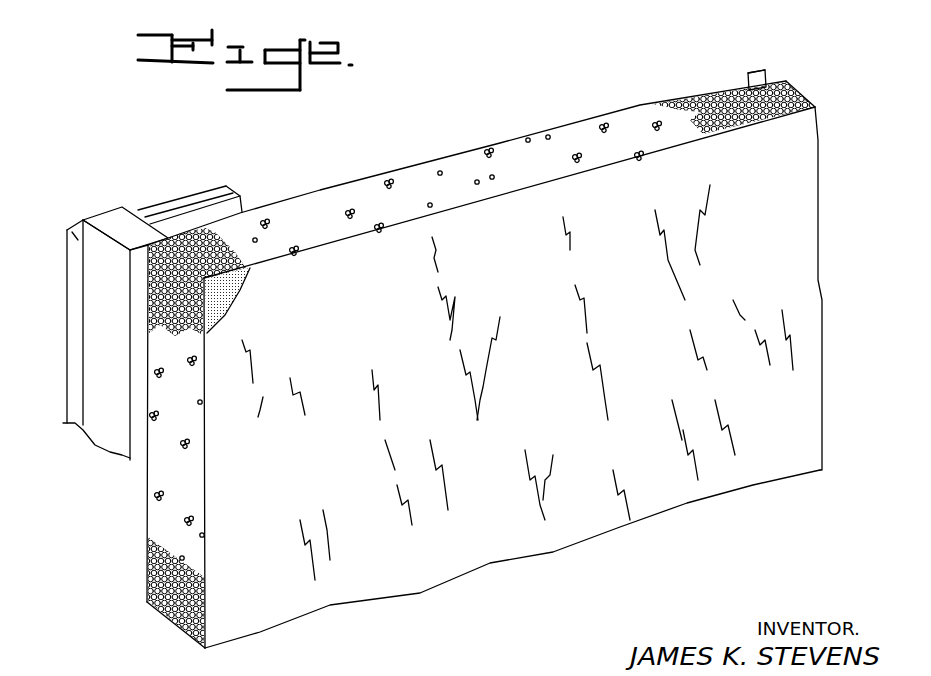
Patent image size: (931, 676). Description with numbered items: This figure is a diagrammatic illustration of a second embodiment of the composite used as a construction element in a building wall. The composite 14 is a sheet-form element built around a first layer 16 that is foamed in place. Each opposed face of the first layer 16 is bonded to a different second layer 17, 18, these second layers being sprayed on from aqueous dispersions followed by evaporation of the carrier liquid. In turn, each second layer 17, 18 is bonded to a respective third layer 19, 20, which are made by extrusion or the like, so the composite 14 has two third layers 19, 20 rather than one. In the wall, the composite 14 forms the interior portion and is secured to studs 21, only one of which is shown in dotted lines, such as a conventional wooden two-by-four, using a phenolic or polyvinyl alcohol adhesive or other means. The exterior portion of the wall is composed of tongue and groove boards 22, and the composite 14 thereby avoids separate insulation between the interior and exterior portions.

The composite 14 is at (505, 136).
The first layer 16 is at (511, 361).
The second layer 17 is at (235, 305).
The second layer 18 is at (788, 71).
The third layer 19 is at (517, 382).
The third layer 20 is at (755, 70).
The stud 21 is at (107, 210).
The tongue and groove boards 22 is at (204, 180).